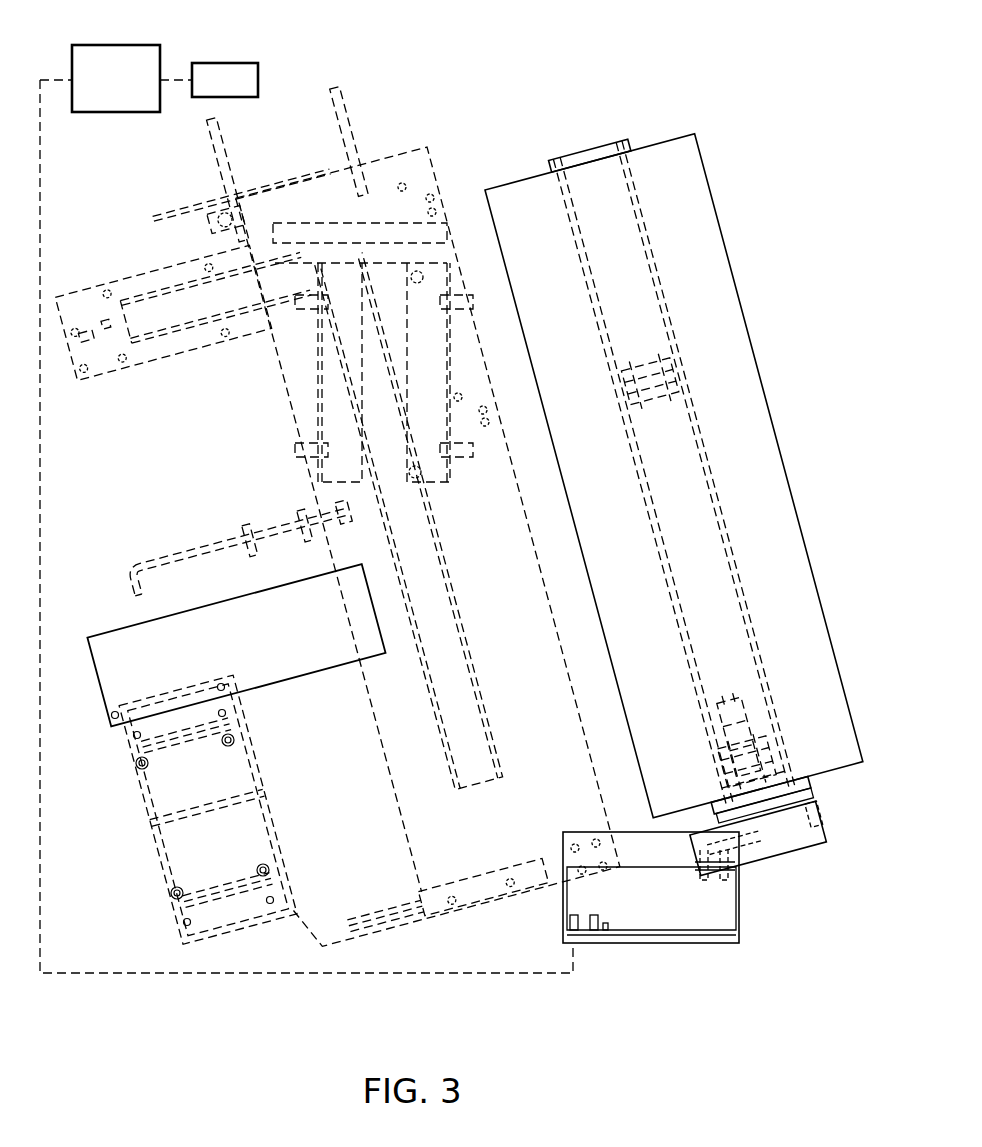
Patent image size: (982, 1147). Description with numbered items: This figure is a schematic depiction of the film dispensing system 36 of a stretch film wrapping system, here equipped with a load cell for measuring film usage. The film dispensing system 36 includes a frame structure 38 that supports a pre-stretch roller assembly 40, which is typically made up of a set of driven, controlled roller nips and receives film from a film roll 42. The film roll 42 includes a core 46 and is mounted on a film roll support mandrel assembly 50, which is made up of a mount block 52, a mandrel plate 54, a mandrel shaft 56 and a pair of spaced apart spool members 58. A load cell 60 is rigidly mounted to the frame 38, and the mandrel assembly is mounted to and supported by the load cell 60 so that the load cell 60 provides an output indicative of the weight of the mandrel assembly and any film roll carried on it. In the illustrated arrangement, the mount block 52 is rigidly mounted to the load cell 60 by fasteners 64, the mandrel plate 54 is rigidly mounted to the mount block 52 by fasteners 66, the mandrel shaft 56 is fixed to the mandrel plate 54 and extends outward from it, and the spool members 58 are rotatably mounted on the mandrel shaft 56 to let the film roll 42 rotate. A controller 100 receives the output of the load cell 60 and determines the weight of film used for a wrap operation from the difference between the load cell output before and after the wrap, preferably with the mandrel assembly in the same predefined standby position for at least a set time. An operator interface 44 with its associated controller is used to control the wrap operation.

The controller 100 is at (113, 57).
The operator interface 44 is at (227, 73).
The film dispensing system 36 is at (726, 510).
The frame structure 38 is at (310, 526).
The pre-stretch roller assembly 40 is at (378, 298).
The film roll 42 is at (726, 528).
The core 46 is at (633, 146).
The film roll support mandrel assembly 50 is at (798, 874).
The mount block 52 is at (772, 850).
The mandrel plate 54 is at (812, 805).
The mandrel shaft 56 is at (727, 673).
The spool members 58 is at (668, 380).
The load cell 60 is at (622, 908).
The fasteners 64 is at (704, 882).
The fasteners 66 is at (818, 825).